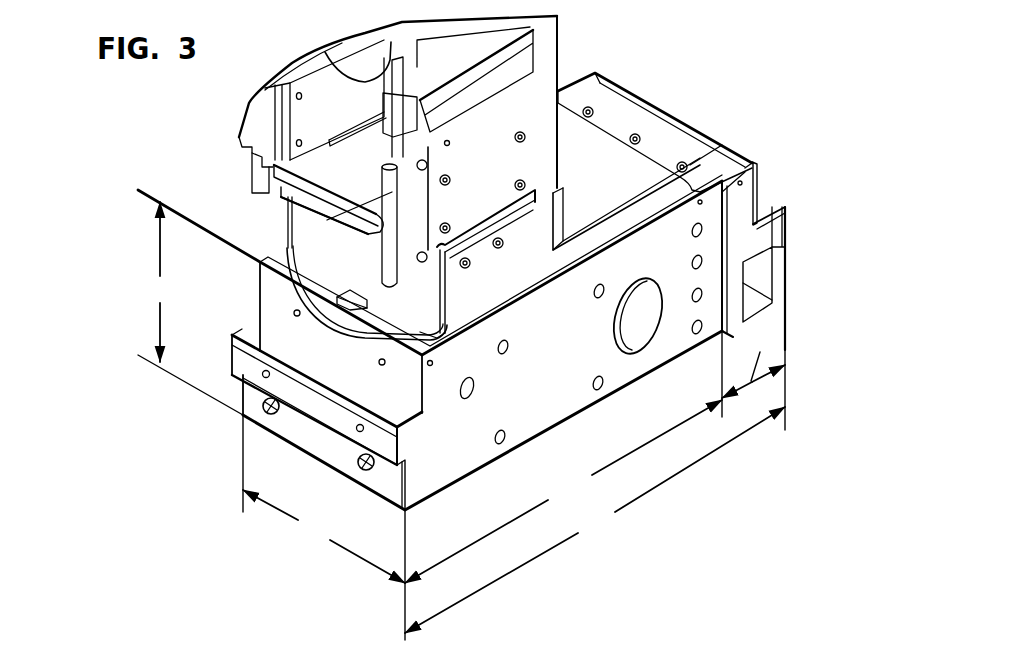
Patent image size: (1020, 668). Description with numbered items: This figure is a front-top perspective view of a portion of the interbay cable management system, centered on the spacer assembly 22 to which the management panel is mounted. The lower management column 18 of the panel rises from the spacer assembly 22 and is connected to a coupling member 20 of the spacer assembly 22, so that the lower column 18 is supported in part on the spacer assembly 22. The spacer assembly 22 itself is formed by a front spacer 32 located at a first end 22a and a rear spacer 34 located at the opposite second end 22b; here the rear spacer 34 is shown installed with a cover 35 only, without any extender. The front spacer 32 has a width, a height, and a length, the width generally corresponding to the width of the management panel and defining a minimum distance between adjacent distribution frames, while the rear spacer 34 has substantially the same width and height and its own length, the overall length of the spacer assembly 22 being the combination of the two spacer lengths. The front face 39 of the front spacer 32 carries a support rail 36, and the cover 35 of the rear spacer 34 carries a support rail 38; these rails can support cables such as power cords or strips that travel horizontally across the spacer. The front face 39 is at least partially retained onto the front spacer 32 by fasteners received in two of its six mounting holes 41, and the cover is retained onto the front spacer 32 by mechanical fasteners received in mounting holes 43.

The lower management column 18 is at (559, 42).
The coupling member 20 is at (506, 289).
The spacer assembly 22 is at (206, 176).
The first end 22a is at (414, 488).
The second end 22b is at (780, 207).
The front spacer 32 is at (524, 388).
The rear spacer 34 is at (681, 99).
The cover 35 is at (742, 196).
The support rail 36 is at (232, 351).
The support rail 38 is at (788, 222).
The front face 39 is at (311, 440).
The mounting holes 41 is at (295, 311).
The mounting holes 43 is at (692, 232).